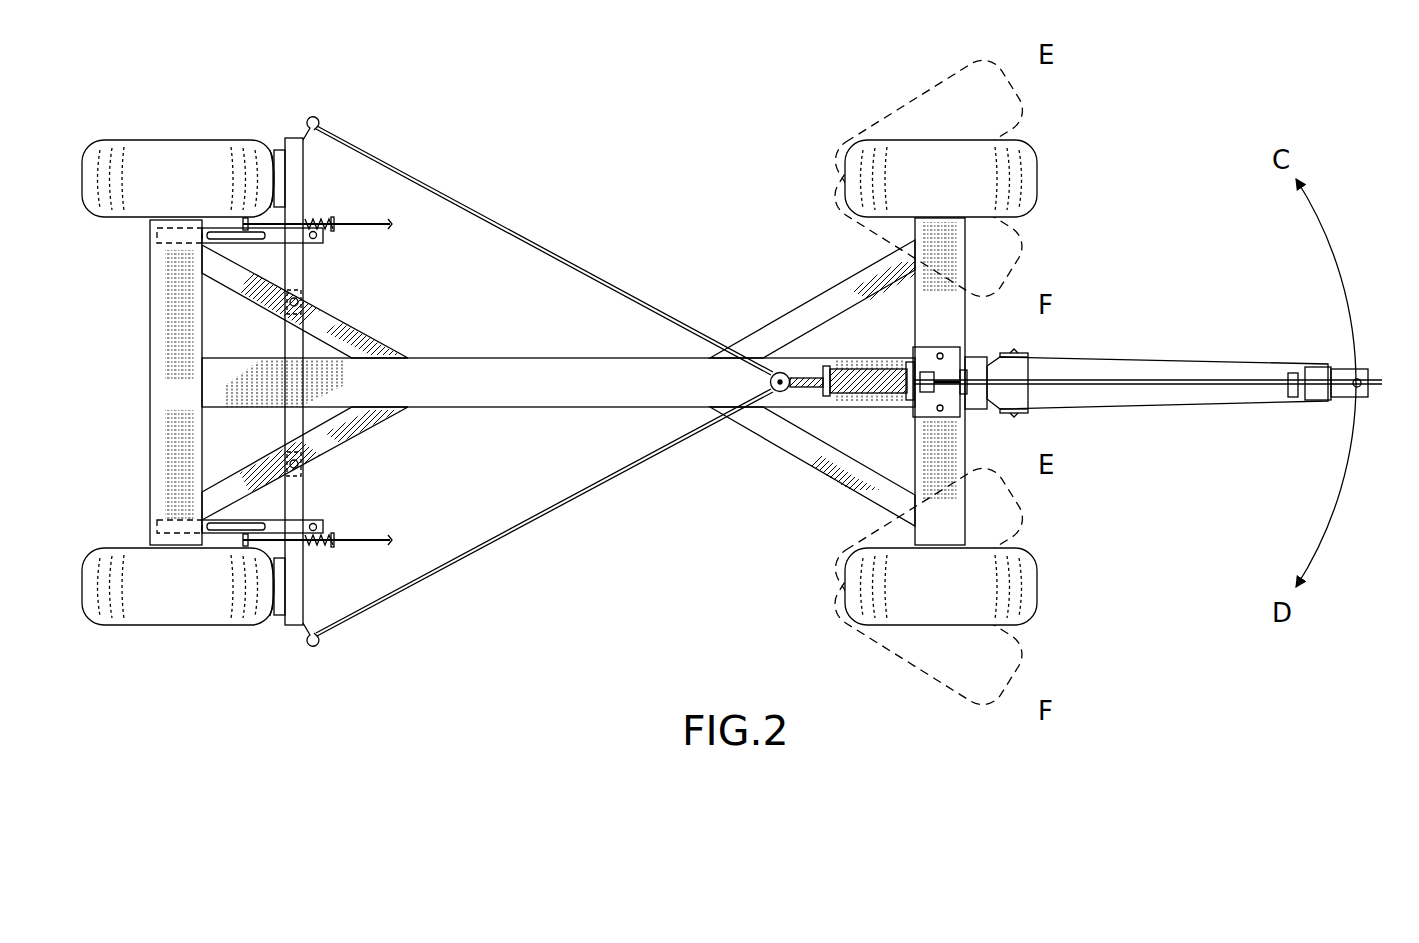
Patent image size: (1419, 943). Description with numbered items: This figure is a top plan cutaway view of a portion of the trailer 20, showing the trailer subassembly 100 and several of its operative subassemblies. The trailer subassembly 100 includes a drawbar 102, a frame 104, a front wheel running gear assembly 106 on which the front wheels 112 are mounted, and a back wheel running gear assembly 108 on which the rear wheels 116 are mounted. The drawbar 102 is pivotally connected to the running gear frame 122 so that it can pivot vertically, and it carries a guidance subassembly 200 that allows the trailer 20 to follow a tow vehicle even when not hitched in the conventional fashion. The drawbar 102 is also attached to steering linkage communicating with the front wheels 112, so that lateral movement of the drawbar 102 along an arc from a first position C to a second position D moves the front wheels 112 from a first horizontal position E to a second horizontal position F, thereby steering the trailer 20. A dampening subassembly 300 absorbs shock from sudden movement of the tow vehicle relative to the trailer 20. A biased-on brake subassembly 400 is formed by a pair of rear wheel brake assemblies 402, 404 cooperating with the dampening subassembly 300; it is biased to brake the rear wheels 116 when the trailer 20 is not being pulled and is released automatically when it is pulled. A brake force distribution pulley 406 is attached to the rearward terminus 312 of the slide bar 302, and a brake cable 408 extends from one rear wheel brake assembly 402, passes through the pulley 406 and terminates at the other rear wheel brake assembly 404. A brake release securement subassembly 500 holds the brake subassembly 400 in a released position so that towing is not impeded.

The trailer 20 is at (1063, 78).
The trailer subassembly 100 is at (645, 182).
The drawbar 102 is at (1147, 390).
The frame 104 is at (507, 358).
The front wheel running gear assembly 106 is at (968, 325).
The back wheel running gear assembly 108 is at (150, 285).
The front wheels 112 is at (845, 176).
The rear wheels 116 is at (195, 140).
The running gear frame 122 is at (968, 450).
The guidance subassembly 200 is at (1290, 422).
The dampening subassembly 300 is at (858, 370).
The slide bar 302 is at (935, 356).
The rearward terminus 312 is at (802, 395).
The biased-on brake subassembly 400 is at (337, 170).
The rear wheel brake assembly 402 is at (338, 208).
The rear wheel brake assembly 404 is at (348, 523).
The brake force distribution pulley 406 is at (772, 393).
The brake cable 408 is at (532, 500).
The brake release securement subassembly 500 is at (935, 410).